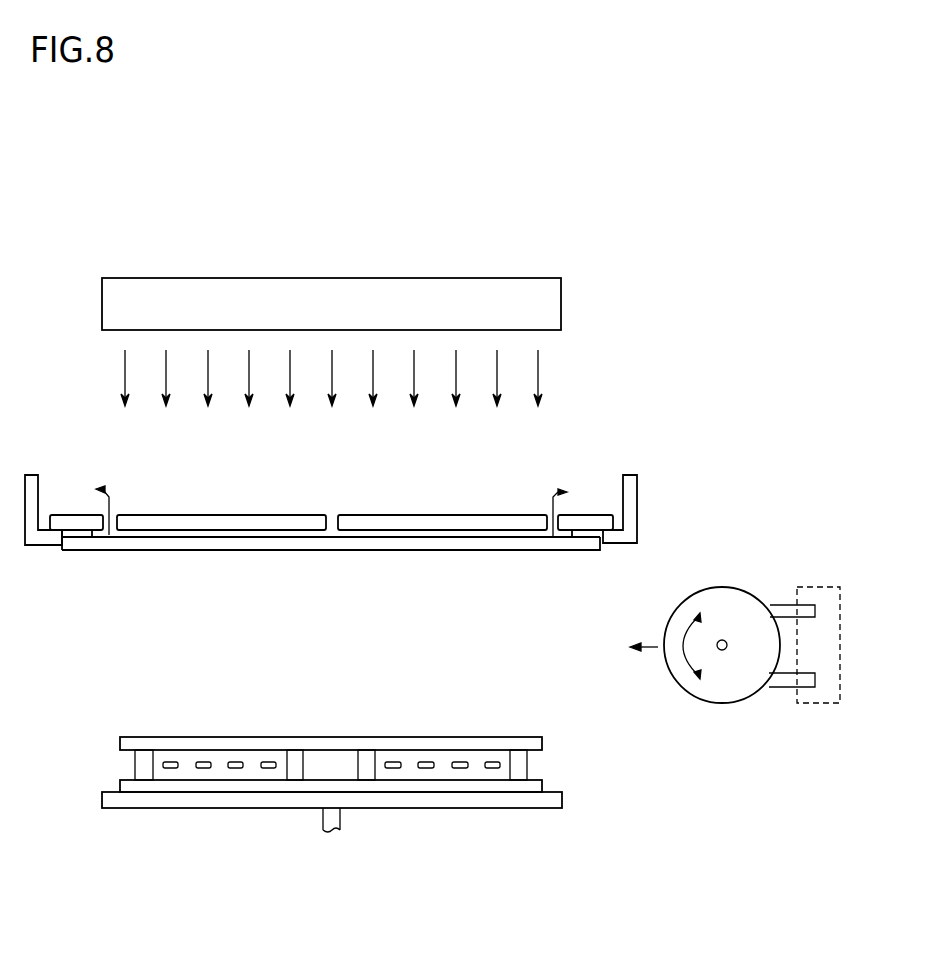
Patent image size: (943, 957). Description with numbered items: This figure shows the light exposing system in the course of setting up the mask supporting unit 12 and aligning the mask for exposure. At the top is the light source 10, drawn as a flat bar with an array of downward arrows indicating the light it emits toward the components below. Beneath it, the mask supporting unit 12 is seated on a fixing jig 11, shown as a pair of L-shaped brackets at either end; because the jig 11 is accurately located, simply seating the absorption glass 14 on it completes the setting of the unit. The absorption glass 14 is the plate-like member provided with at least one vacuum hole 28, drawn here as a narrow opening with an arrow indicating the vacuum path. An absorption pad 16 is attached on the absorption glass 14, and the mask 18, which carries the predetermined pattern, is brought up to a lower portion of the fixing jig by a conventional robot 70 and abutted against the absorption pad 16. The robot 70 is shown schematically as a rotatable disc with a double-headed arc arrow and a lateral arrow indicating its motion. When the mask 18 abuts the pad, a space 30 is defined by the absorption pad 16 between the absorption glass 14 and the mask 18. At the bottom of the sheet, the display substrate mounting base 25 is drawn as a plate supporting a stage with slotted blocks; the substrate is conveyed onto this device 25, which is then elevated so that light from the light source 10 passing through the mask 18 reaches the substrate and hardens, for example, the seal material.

The light source 10 is at (371, 304).
The fixing jig 11 is at (365, 505).
The mask supporting unit 12 is at (238, 500).
The absorption glass 14 is at (442, 494).
The absorption pad 16 is at (76, 558).
The mask 18 is at (331, 574).
The display substrate mounting base 25 is at (367, 817).
The vacuum hole 28 is at (552, 495).
The space 30 is at (331, 570).
The robot 70 is at (737, 578).